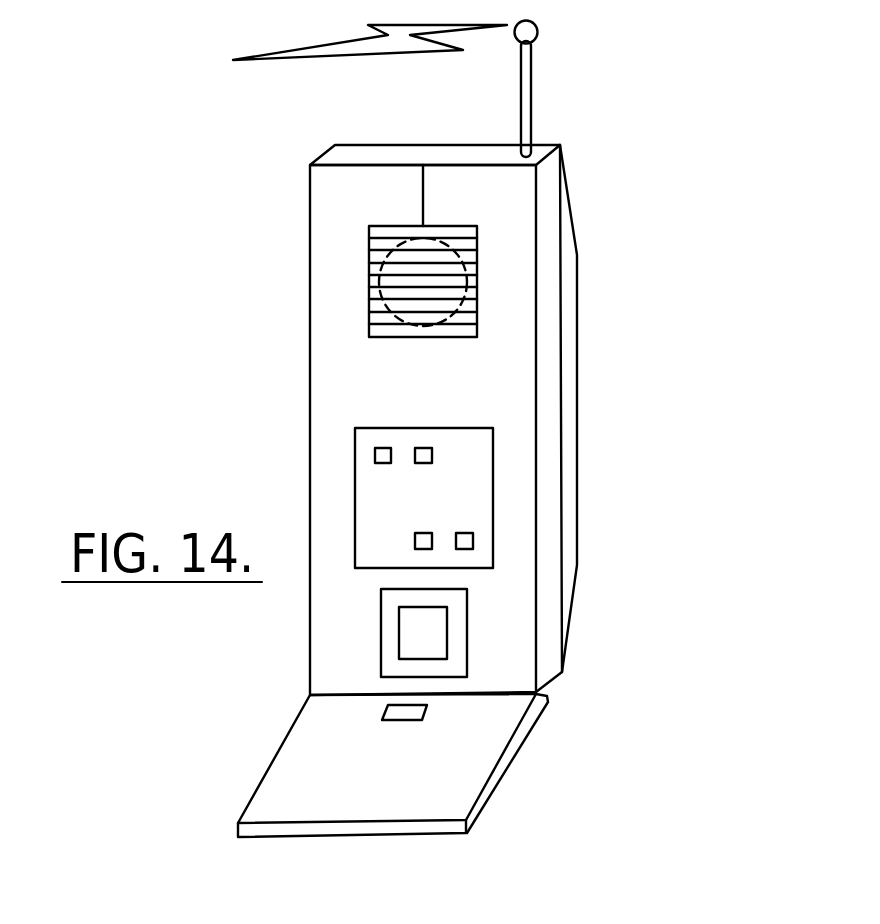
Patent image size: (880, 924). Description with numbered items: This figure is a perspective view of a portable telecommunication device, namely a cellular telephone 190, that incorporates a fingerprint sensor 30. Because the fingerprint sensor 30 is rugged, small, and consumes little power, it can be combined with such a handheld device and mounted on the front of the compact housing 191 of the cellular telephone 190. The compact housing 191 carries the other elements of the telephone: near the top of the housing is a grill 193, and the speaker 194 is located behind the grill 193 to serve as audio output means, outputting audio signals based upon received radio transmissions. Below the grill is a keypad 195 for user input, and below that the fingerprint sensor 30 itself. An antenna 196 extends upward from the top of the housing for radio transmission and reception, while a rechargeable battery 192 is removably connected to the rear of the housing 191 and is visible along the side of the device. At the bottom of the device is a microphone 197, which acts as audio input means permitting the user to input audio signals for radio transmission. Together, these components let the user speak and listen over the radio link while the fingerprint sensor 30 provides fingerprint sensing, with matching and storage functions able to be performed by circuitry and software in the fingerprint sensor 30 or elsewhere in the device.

The cellular telephone 190 is at (504, 185).
The compact housing 191 is at (310, 205).
The rechargeable battery 192 is at (598, 418).
The grill 193 is at (355, 301).
The speaker 194 is at (360, 278).
The keypad 195 is at (370, 497).
The antenna 196 is at (558, 89).
The microphone 197 is at (392, 743).
The fingerprint sensor 30 is at (502, 621).